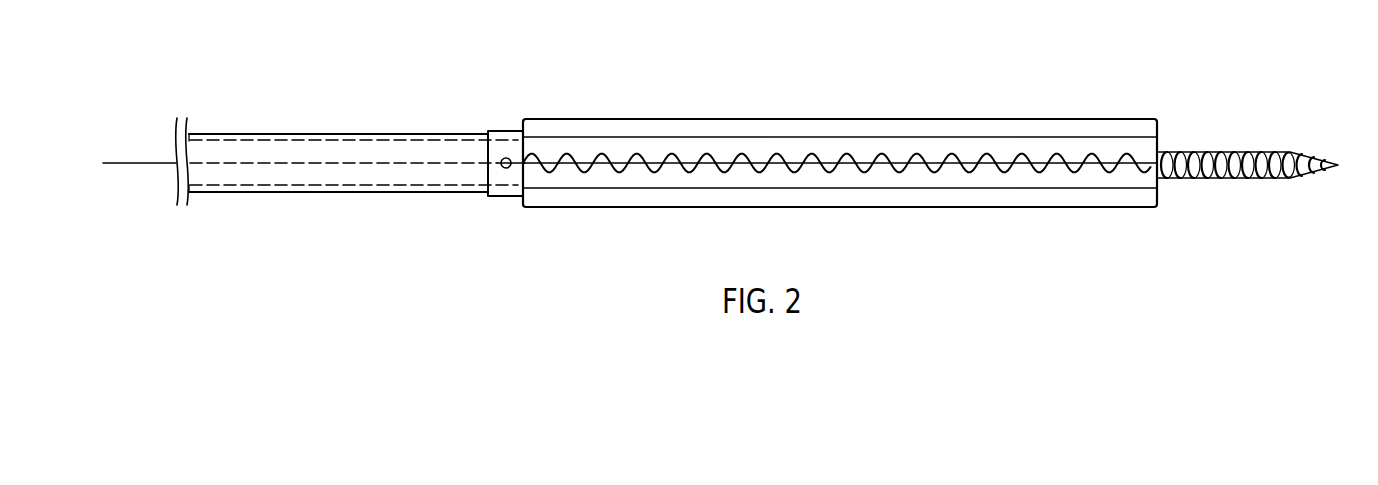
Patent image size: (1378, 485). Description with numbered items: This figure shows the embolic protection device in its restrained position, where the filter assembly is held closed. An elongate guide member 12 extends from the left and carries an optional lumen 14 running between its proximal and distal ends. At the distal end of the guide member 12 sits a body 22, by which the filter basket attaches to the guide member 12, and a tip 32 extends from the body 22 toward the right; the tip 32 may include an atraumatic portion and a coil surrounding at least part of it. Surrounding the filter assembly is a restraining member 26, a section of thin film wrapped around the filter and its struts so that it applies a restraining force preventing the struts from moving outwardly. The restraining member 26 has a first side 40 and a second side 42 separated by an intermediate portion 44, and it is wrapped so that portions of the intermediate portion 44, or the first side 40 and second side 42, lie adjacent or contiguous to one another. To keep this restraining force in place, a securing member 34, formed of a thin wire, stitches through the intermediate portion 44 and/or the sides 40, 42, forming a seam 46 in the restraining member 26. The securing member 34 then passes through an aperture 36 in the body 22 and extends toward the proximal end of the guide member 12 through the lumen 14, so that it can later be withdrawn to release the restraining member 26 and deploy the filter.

The guide member 12 is at (232, 192).
The lumen 14 is at (218, 140).
The body 22 is at (505, 196).
The restraining member 26 is at (1072, 208).
The tip 32 is at (1250, 177).
The securing member 34 is at (142, 163).
The aperture 36 is at (506, 158).
The first side 40 is at (797, 158).
The second side 42 is at (778, 168).
The intermediate portion 44 is at (600, 197).
The seam 46 is at (868, 158).